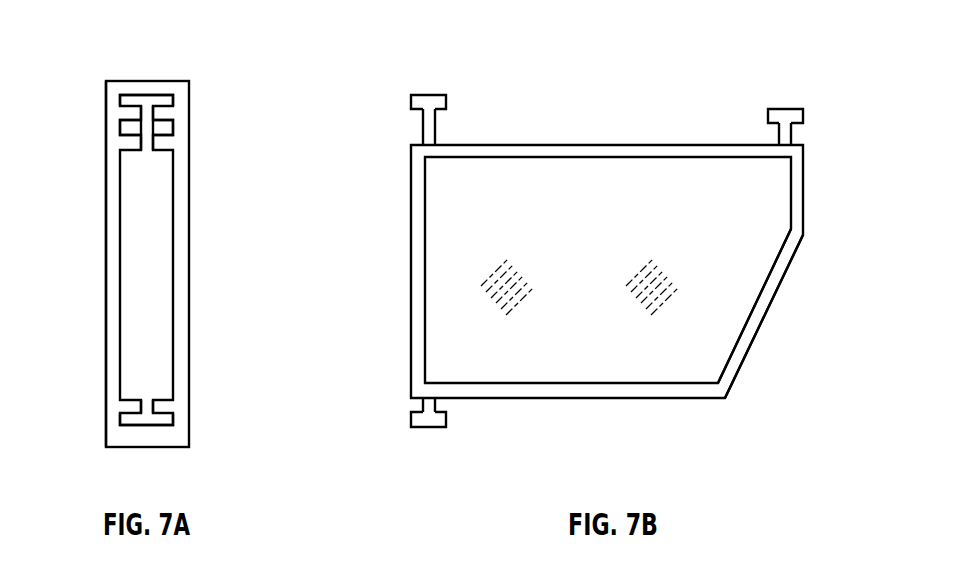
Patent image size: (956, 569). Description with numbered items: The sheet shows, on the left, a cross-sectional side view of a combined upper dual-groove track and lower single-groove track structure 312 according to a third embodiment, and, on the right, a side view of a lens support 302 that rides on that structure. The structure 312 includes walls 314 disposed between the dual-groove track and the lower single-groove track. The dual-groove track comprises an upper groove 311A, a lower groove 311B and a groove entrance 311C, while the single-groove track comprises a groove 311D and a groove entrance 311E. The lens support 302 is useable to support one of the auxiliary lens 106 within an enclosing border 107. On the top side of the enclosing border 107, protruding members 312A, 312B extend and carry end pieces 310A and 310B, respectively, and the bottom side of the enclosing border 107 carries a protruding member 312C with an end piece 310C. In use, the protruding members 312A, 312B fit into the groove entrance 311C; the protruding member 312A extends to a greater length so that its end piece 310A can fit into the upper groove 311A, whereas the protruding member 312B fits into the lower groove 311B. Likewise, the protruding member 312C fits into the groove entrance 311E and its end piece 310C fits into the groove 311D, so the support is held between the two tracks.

In FIG. 7A, the combined upper dual-groove track and lower single-groove track structure 312 is at (113, 59).
In FIG. 7A, the walls 314 is at (112, 316).
In FIG. 7A, the upper groove 311A is at (176, 103).
In FIG. 7A, the lower groove 311B is at (175, 130).
In FIG. 7A, the groove entrance 311C is at (148, 150).
In FIG. 7A, the groove 311D is at (146, 426).
In FIG. 7A, the groove entrance 311E is at (148, 398).
In FIG. 7B, the lens support 302 is at (411, 60).
In FIG. 7B, the auxiliary lens 106 is at (624, 165).
In FIG. 7B, the enclosing border 107 is at (763, 302).
In FIG. 7B, the end piece 310A is at (432, 95).
In FIG. 7B, the end piece 310B is at (787, 108).
In FIG. 7B, the end piece 310C is at (430, 428).
In FIG. 7B, the protruding member 312A is at (436, 121).
In FIG. 7B, the protruding member 312B is at (792, 130).
In FIG. 7B, the protruding member 312C is at (421, 404).